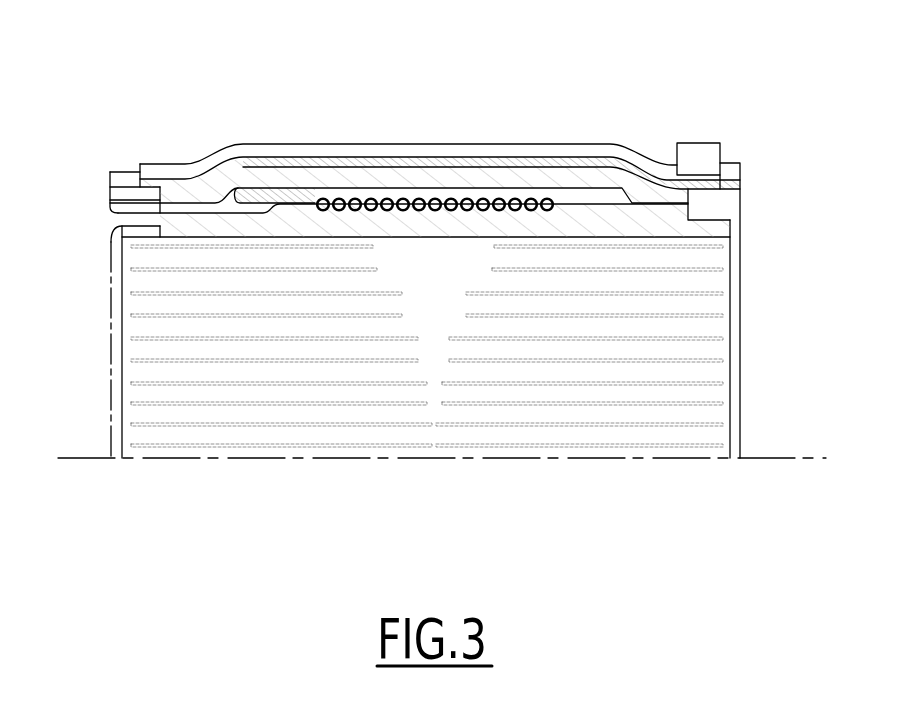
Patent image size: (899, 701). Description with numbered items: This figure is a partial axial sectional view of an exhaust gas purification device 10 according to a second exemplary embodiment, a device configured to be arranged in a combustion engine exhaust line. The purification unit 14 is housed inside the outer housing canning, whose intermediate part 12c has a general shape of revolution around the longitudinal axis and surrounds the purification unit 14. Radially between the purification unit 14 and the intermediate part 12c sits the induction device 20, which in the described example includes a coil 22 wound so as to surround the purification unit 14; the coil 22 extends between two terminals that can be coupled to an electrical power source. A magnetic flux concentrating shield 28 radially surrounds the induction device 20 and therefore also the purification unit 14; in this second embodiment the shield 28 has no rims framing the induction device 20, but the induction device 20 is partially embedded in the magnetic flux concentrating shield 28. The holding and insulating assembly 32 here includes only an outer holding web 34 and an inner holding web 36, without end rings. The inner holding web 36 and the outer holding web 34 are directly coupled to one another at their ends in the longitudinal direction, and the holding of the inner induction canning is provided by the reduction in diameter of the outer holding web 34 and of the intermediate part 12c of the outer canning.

The exhaust gas purification device 10 is at (140, 104).
The intermediate part 12c is at (612, 145).
The purification unit 14 is at (140, 327).
The induction device 20 is at (330, 150).
The coil 22 is at (490, 194).
The magnetic flux concentrating shield 28 is at (428, 182).
The holding and insulating assembly 32 is at (540, 164).
The outer holding web 34 is at (257, 179).
The inner holding web 36 is at (661, 221).